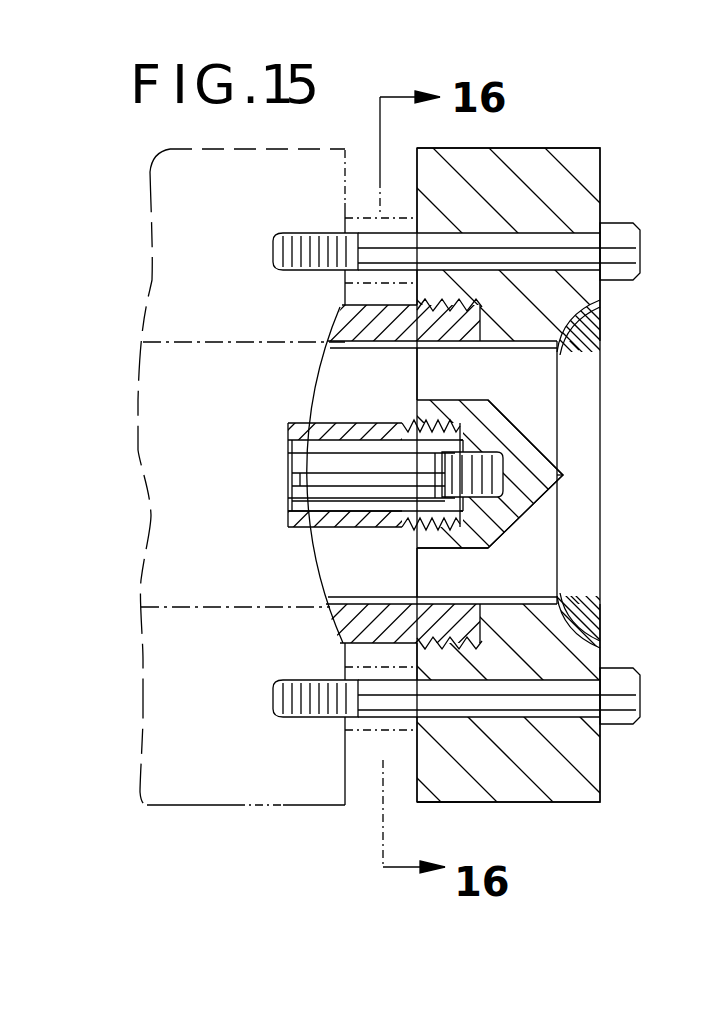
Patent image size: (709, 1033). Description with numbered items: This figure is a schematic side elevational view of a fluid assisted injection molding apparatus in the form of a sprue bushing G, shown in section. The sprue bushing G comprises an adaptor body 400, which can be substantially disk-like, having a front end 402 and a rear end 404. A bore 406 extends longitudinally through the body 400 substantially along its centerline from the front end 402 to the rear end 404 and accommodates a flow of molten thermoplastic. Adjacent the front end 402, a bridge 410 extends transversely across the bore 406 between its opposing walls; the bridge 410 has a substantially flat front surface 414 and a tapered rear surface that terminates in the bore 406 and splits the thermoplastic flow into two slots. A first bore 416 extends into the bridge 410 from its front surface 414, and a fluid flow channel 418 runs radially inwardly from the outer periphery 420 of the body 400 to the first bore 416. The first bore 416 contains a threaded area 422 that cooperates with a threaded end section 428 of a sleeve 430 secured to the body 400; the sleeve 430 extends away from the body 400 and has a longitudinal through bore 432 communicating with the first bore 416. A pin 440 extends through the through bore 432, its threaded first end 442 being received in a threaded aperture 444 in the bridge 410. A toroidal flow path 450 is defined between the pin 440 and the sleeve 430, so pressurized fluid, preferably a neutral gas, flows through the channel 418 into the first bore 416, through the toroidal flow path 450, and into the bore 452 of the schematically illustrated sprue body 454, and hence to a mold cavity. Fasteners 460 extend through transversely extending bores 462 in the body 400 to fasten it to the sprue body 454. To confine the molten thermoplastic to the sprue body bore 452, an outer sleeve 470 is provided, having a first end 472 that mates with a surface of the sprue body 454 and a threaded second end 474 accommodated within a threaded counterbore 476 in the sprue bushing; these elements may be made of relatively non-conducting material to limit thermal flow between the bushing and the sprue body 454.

The adaptor body 400 is at (570, 142).
The front end 402 is at (408, 745).
The rear end 404 is at (600, 180).
The bore 406 is at (558, 355).
The bridge 410 is at (530, 450).
The front surface 414 is at (405, 545).
The first bore 416 is at (418, 428).
The fluid flow channel 418 is at (445, 430).
The outer periphery 420 is at (575, 803).
The threaded area 422 is at (505, 548).
The threaded end section 428 is at (520, 520).
The sleeve 430 is at (335, 486).
The through bore 432 is at (290, 425).
The pin 440 is at (288, 463).
The first end 442 is at (432, 487).
The threaded aperture 444 is at (487, 432).
The toroidal flow path 450 is at (297, 508).
The bore 452 is at (168, 350).
The sprue body 454 is at (195, 716).
The fasteners 460 is at (622, 720).
The transversely extending bores 462 is at (352, 212).
The outer sleeve 470 is at (328, 625).
The first end 472 is at (337, 320).
The second end 474 is at (460, 620).
The threaded counterbore 476 is at (510, 270).
The sprue bushing G is at (464, 810).